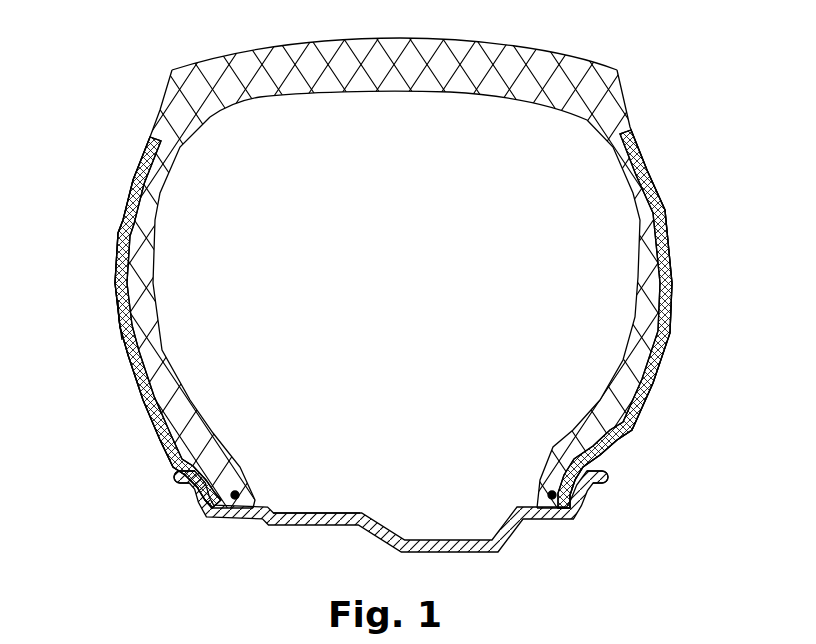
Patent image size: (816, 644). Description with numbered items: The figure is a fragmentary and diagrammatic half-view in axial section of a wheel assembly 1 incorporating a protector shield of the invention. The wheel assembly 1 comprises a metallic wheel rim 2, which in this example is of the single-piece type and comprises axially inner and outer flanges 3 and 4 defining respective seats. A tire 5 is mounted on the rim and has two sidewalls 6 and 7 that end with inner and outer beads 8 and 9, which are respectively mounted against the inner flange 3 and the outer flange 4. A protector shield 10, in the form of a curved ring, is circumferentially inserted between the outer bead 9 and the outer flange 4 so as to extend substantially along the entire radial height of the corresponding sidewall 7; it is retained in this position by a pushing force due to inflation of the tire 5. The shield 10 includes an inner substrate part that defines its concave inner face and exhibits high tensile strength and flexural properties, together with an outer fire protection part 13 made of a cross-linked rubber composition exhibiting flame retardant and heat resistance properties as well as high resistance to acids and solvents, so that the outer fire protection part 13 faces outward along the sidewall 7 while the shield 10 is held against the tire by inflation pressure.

The wheel assembly 1 is at (490, 573).
The metallic wheel rim 2 is at (313, 525).
The inner flange 3 is at (603, 477).
The outer flange 4 is at (180, 478).
The tire 5 is at (170, 80).
The sidewall 6 is at (635, 290).
The sidewall 7 is at (150, 277).
The inner bead 8 is at (542, 492).
The outer bead 9 is at (250, 487).
The protector shield 10 is at (113, 277).
The outer fire protection part 13 is at (122, 323).